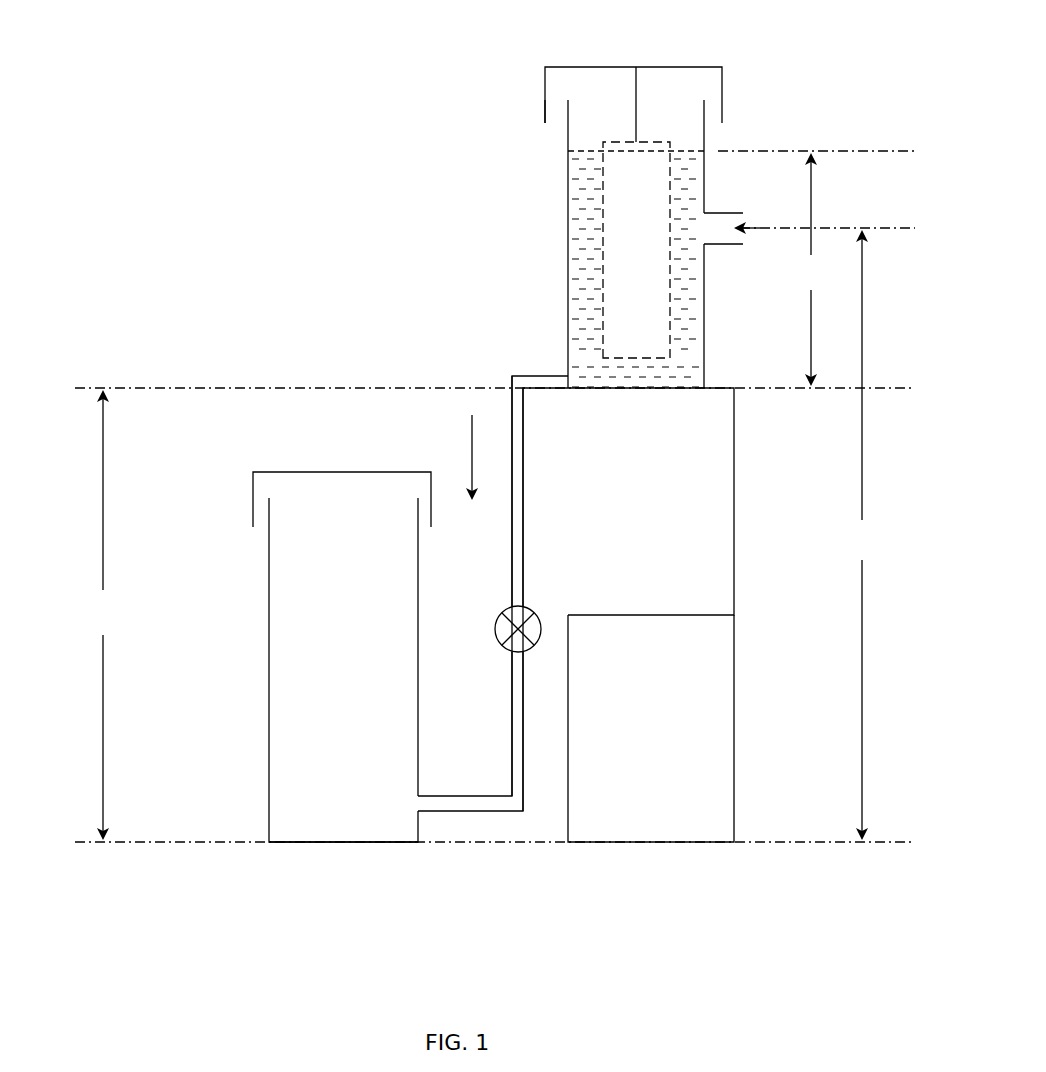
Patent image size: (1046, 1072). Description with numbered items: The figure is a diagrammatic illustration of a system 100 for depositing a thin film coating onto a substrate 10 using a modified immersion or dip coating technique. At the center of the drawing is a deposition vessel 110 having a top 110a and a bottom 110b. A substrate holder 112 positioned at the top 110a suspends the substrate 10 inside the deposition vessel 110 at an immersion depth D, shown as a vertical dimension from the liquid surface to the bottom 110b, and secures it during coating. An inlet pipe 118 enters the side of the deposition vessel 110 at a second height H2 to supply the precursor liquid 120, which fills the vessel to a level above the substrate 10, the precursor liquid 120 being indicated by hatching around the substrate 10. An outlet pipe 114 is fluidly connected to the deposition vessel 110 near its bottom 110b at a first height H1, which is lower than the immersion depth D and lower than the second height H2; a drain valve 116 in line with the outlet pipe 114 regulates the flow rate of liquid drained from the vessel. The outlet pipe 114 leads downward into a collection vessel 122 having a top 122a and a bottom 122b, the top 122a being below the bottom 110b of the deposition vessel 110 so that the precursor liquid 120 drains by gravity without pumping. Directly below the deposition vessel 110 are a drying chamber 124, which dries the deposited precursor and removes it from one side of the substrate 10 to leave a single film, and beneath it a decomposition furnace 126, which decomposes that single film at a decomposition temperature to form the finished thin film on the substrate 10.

The system 100 is at (205, 95).
The deposition vessel 110 is at (730, 138).
The top 110a is at (568, 103).
The bottom 110b is at (588, 387).
The substrate holder 112 is at (637, 97).
The substrate 10 is at (603, 172).
The precursor liquid 120 is at (582, 238).
The inlet pipe 118 is at (718, 213).
The outlet pipe 114 is at (512, 560).
The drain valve 116 is at (508, 650).
The collection vessel 122 is at (266, 596).
The top 122a is at (270, 508).
The bottom 122b is at (348, 845).
The drying chamber 124 is at (734, 480).
The decomposition furnace 126 is at (734, 720).
The first height H1 is at (103, 615).
The second height H2 is at (860, 535).
The immersion depth D is at (809, 269).